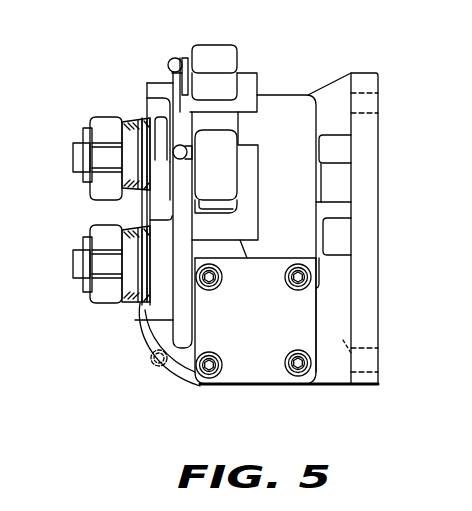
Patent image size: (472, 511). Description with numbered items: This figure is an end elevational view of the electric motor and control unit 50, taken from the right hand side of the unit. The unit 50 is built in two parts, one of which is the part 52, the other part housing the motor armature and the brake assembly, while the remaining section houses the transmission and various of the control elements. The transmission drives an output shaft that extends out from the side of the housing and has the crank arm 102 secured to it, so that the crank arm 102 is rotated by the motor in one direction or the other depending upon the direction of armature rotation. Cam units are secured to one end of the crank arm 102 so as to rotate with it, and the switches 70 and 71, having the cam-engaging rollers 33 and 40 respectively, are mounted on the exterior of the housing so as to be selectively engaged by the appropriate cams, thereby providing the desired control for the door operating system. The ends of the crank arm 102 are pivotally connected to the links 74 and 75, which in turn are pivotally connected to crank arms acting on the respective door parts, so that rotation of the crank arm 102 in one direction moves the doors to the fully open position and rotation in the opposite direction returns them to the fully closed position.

The cam-engaging roller 33 is at (170, 60).
The switch 70 is at (210, 56).
The link 74 is at (99, 128).
The cam-engaging roller 40 is at (176, 148).
The switch 71 is at (222, 168).
The crank arm 102 is at (138, 203).
The link 75 is at (102, 300).
The electric motor and control unit 50 is at (140, 365).
The part of the unit 52 is at (251, 387).